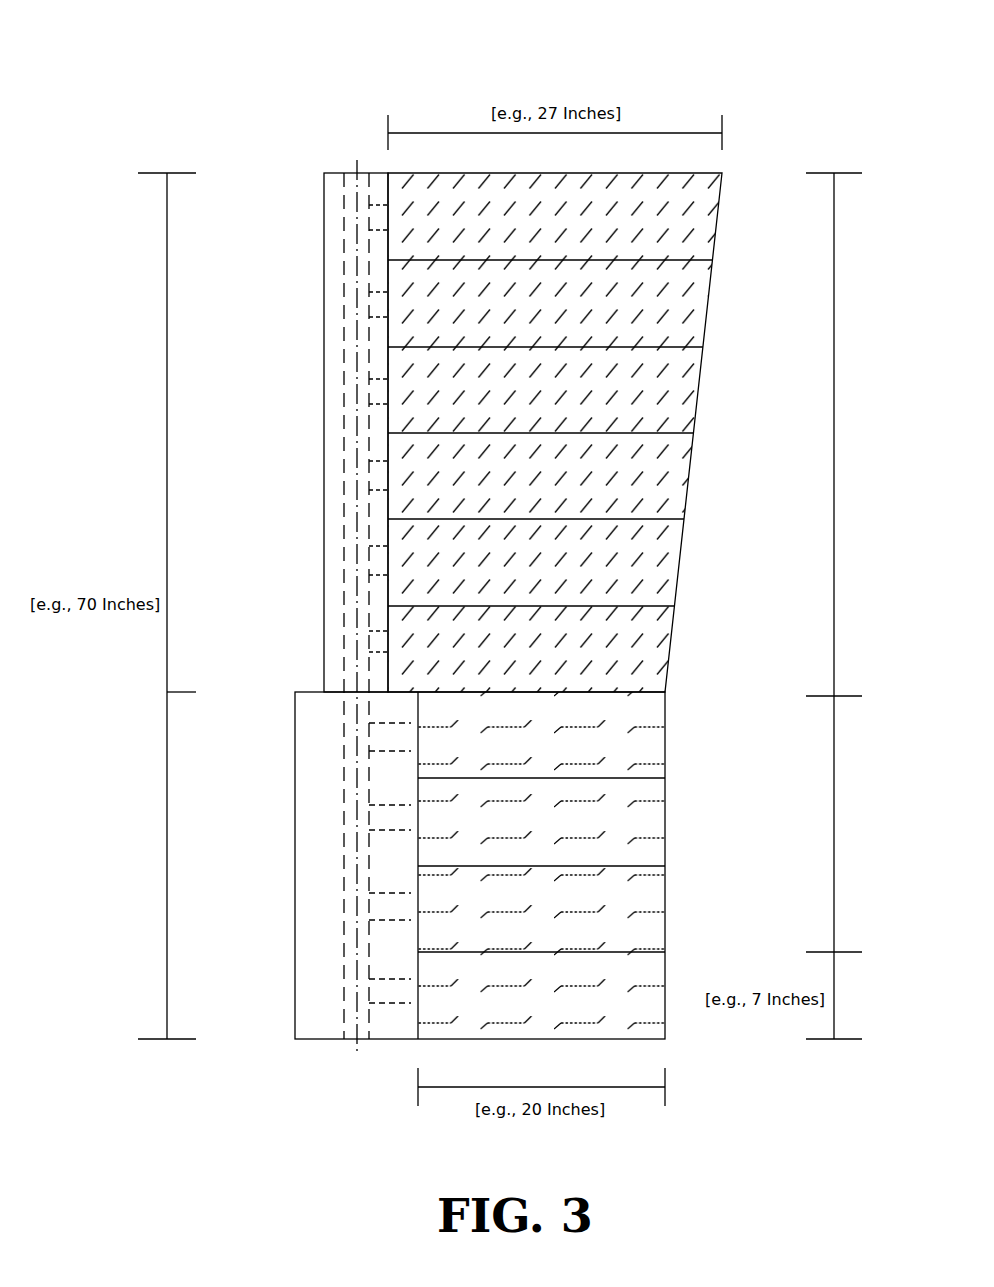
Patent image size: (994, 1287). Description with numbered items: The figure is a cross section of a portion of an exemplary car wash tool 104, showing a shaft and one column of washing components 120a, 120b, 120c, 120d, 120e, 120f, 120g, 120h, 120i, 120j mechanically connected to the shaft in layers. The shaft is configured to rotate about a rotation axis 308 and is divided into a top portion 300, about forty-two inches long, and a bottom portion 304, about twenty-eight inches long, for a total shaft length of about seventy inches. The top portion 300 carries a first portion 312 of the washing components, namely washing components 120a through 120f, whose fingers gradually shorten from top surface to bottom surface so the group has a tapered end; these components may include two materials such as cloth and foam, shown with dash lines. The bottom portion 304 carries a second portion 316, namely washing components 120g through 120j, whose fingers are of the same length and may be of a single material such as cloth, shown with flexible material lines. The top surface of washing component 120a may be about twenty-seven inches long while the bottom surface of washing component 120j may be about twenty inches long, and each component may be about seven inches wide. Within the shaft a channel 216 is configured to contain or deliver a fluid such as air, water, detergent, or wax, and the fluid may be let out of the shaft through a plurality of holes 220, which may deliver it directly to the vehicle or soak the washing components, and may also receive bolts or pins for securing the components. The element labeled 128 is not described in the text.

The car wash tool 104 is at (338, 37).
The washing component 120a is at (706, 220).
The washing component 120b is at (694, 304).
The washing component 120c is at (684, 397).
The washing component 120d is at (676, 483).
The washing component 120e is at (664, 570).
The washing component 120f is at (655, 655).
The washing component 120g is at (652, 741).
The washing component 120h is at (656, 824).
The washing component 120i is at (650, 894).
The washing component 120j is at (654, 970).
The side frame member 128 is at (333, 608).
The channel 216 is at (348, 198).
The holes 220 is at (384, 207).
The top portion 300 is at (236, 432).
The bottom portion 304 is at (217, 865).
The rotation axis 308 is at (356, 1030).
The first portion 312 is at (889, 434).
The second portion 316 is at (886, 867).